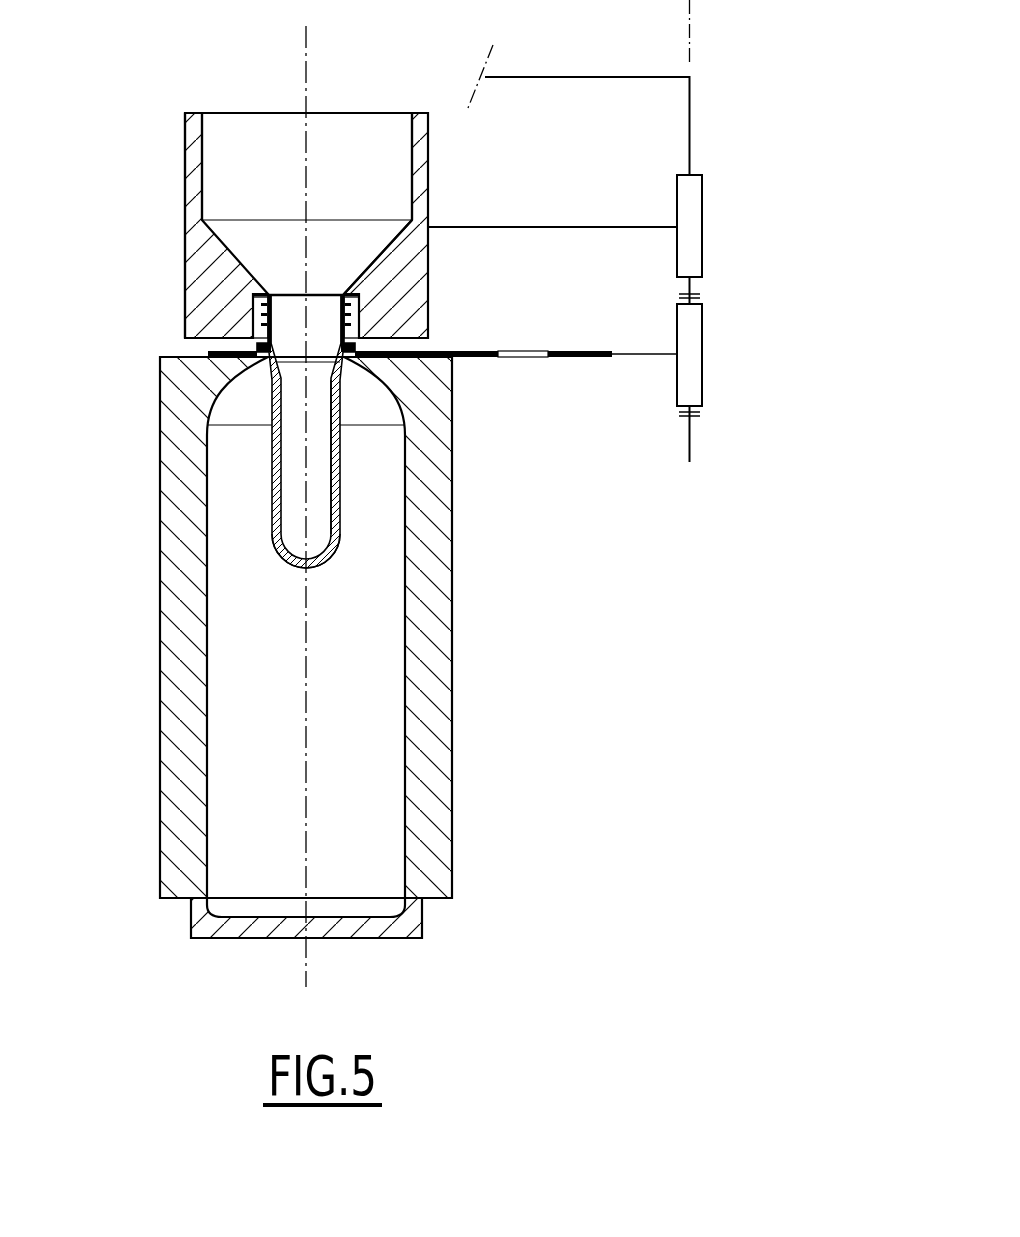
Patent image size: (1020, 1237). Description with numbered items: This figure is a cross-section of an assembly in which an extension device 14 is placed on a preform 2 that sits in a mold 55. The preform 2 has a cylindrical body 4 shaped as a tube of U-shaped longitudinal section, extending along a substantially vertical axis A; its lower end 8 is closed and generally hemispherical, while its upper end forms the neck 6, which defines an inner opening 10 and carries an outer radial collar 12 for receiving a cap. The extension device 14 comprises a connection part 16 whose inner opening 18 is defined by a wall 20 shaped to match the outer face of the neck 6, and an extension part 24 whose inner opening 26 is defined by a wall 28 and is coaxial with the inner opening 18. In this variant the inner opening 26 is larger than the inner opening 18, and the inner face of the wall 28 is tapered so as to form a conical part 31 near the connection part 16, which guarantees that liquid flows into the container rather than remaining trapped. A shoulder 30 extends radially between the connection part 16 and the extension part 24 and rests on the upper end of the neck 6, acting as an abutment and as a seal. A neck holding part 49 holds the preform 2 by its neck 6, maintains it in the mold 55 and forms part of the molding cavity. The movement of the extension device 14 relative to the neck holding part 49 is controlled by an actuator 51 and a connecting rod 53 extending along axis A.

The preform 2 is at (273, 487).
The body 4 is at (333, 455).
The neck 6 is at (343, 290).
The lower end 8 is at (327, 560).
The inner opening 10 is at (294, 323).
The outer radial collar 12 is at (258, 337).
The extension device 14 is at (190, 220).
The connection part 16 is at (253, 315).
The inner opening 18 is at (355, 322).
The wall 20 is at (365, 301).
The extension part 24 is at (385, 127).
The inner opening 26 is at (228, 127).
The wall 28 is at (186, 135).
The shoulder 30 is at (257, 287).
The conical part 31 is at (420, 242).
The neck holding part 49 is at (478, 360).
The actuator 51 is at (693, 227).
The connecting rod 53 is at (693, 285).
The mold 55 is at (435, 655).
The axis A is at (306, 26).